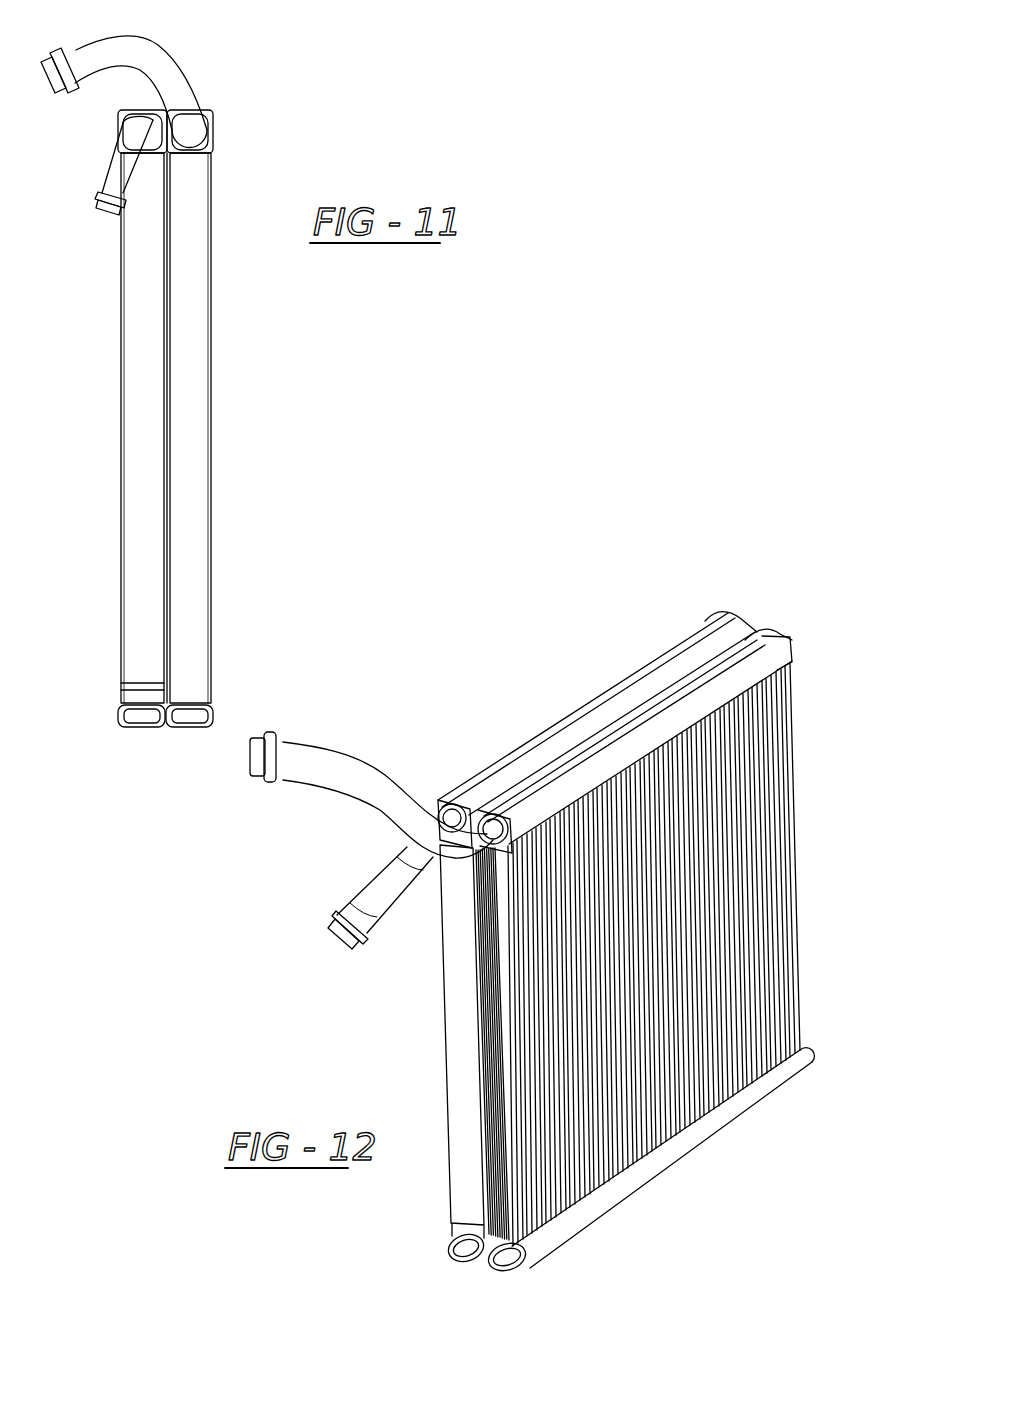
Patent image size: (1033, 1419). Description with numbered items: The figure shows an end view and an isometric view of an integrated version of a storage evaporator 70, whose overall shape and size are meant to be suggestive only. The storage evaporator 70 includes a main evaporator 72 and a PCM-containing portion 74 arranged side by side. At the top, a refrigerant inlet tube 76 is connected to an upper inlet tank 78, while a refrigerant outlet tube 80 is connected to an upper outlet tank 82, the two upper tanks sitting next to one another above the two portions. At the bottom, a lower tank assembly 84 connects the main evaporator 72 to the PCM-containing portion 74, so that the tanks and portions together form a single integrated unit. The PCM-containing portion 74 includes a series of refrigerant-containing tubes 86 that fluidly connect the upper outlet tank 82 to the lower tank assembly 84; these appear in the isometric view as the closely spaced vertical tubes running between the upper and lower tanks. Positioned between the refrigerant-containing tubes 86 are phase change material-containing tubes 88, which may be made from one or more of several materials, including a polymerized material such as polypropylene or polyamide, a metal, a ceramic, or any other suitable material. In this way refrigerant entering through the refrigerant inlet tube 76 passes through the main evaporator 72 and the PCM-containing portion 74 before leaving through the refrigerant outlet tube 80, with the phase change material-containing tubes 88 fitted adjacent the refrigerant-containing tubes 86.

In FIG. 11, the storage evaporator 70 is at (226, 438).
In FIG. 12, the storage evaporator 70 is at (538, 660).
In FIG. 11, the main evaporator 72 is at (137, 390).
In FIG. 12, the main evaporator 72 is at (460, 974).
In FIG. 11, the PCM-containing portion 74 is at (192, 390).
In FIG. 12, the PCM-containing portion 74 is at (732, 902).
In FIG. 11, the refrigerant inlet tube 76 is at (120, 172).
In FIG. 12, the refrigerant inlet tube 76 is at (378, 899).
In FIG. 11, the upper inlet tank 78 is at (120, 116).
In FIG. 12, the upper inlet tank 78 is at (681, 657).
In FIG. 11, the refrigerant outlet tube 80 is at (160, 72).
In FIG. 12, the refrigerant outlet tube 80 is at (339, 768).
In FIG. 11, the upper outlet tank 82 is at (207, 122).
In FIG. 12, the upper outlet tank 82 is at (773, 633).
In FIG. 11, the lower tank assembly 84 is at (122, 715).
In FIG. 12, the lower tank assembly 84 is at (516, 1258).
In FIG. 12, the refrigerant-containing tubes 86 is at (738, 805).
In FIG. 12, the phase change material-containing tubes 88 is at (703, 942).